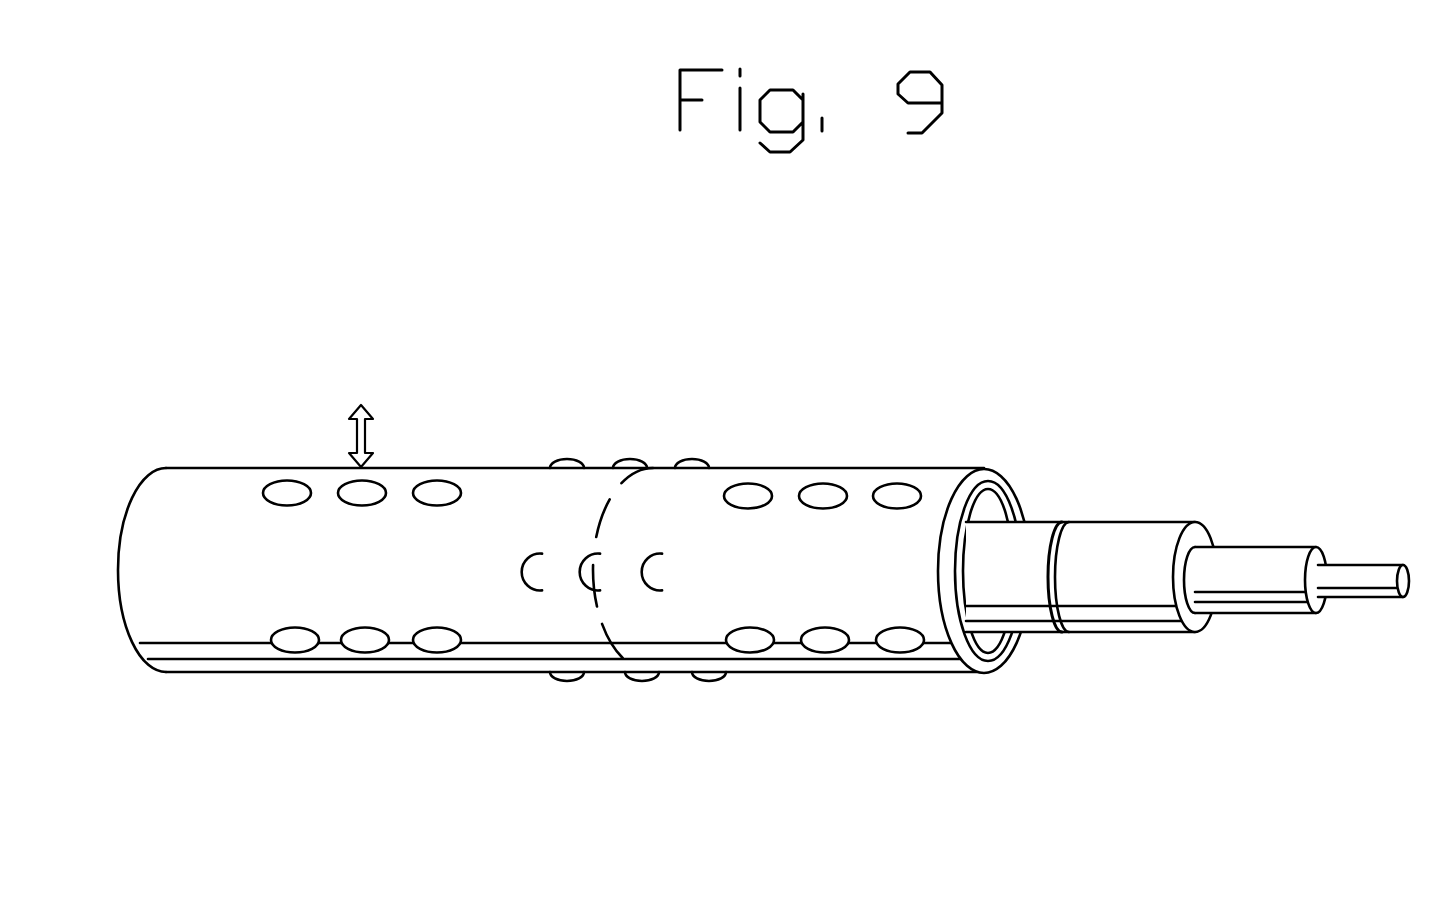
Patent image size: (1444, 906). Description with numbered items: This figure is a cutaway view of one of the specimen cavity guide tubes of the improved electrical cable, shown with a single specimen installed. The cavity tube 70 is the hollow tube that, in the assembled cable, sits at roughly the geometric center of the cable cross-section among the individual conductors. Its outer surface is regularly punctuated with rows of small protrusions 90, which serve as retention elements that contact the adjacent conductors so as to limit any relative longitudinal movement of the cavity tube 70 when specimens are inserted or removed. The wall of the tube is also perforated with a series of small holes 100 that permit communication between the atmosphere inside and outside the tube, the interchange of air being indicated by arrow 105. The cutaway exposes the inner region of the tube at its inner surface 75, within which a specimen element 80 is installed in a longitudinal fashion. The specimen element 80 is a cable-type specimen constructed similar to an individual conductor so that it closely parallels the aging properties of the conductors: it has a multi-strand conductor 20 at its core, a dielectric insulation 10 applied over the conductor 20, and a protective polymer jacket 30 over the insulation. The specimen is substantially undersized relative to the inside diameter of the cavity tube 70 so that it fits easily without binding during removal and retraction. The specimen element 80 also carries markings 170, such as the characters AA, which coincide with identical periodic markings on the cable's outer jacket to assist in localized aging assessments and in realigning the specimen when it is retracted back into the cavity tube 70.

The dielectric insulation 10 is at (1263, 547).
The conductor 20 is at (1372, 565).
The protective polymer jacket 30 is at (1165, 635).
The cavity tube 70 is at (988, 677).
The inner surface of ring 75 is at (1008, 643).
The specimen element 80 is at (1225, 410).
The protrusions 90 is at (693, 462).
The holes 100 is at (286, 466).
The arrow 105 is at (366, 408).
The markings 170 is at (1090, 545).